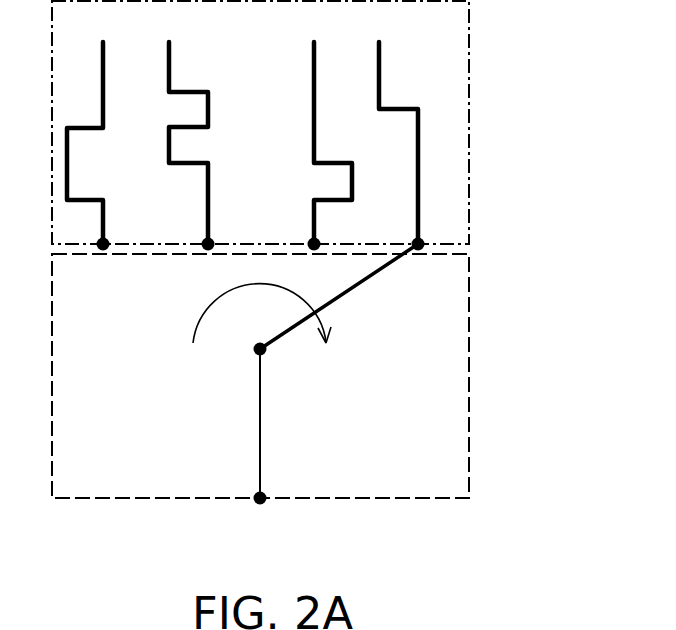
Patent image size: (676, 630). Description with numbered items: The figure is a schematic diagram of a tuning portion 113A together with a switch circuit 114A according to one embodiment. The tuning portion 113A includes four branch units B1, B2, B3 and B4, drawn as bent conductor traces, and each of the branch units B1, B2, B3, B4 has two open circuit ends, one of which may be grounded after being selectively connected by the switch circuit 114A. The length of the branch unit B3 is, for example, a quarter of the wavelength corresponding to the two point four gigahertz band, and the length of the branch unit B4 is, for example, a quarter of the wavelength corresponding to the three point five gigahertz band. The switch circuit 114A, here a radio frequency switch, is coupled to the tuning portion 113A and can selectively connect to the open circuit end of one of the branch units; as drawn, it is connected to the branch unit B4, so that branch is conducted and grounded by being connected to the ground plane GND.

The tuning portion 113A is at (309, 126).
The switch circuit 114A is at (309, 396).
The branch unit B1 is at (92, 127).
The branch unit B2 is at (185, 127).
The branch unit B3 is at (326, 127).
The branch unit B4 is at (395, 127).
The ground plane GND is at (260, 449).